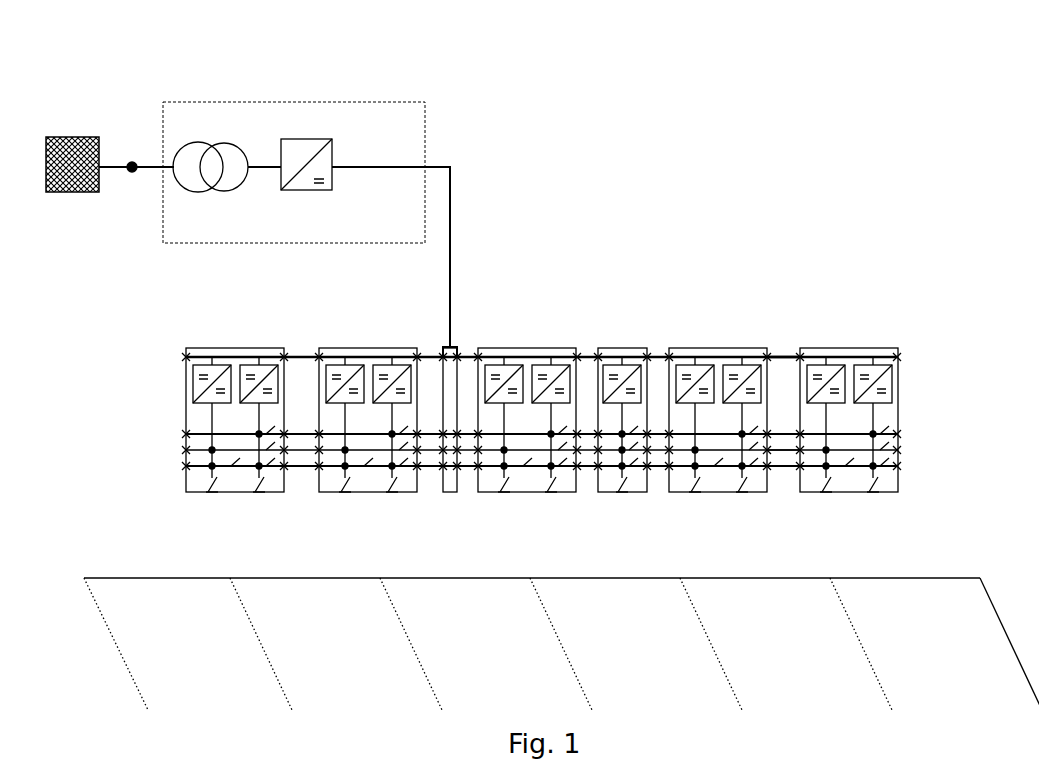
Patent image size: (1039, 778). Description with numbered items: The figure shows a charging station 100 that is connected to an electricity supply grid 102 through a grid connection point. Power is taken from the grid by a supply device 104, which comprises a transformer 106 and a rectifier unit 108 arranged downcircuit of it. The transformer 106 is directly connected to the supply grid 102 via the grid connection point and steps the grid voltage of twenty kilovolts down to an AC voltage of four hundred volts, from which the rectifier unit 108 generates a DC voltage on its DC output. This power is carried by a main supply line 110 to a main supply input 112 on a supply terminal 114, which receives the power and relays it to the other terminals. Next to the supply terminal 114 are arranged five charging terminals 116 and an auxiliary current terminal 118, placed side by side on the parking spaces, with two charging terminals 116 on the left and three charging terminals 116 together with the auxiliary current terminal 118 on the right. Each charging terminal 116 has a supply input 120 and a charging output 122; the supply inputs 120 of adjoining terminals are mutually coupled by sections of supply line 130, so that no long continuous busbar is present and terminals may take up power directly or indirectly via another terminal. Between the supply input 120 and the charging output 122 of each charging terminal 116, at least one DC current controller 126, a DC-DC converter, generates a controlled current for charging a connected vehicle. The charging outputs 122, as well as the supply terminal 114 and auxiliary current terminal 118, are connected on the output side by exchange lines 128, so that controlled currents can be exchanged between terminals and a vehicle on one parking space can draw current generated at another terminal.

The charging station 100 is at (752, 165).
The electricity supply grid 102 is at (75, 137).
The supply device 104 is at (294, 127).
The transformer 106 is at (227, 191).
The rectifier unit 108 is at (313, 191).
The main supply line 110 is at (436, 162).
The main supply input 112 is at (458, 338).
The supply terminal 114 is at (450, 500).
The charging terminal 116 is at (577, 378).
The auxiliary current terminal 118 is at (617, 500).
The supply input 120 is at (165, 357).
The charging output 122 is at (165, 470).
The DC current controller 126 is at (882, 378).
The exchange line 128 is at (780, 467).
The supply line 130 is at (785, 355).